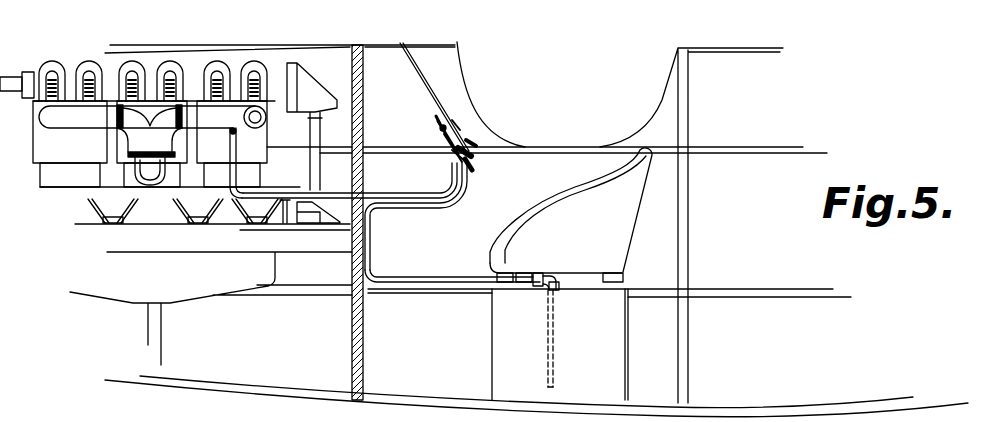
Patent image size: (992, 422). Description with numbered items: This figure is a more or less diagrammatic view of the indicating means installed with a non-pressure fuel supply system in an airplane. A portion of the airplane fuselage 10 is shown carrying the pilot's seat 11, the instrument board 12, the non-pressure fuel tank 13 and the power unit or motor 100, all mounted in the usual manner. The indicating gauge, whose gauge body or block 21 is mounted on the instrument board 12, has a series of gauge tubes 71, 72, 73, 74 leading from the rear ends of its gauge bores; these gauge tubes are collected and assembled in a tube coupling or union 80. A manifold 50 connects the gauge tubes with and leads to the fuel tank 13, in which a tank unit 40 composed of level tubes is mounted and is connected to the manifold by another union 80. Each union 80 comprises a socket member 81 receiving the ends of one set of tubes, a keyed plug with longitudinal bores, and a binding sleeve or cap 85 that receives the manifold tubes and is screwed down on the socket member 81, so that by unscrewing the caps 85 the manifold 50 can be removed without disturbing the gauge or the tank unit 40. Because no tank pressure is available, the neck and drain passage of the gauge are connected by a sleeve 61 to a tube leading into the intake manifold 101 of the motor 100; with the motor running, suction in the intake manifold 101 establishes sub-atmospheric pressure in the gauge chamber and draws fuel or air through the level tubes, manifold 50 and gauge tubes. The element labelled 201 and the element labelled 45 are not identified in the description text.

The airplane fuselage 10 is at (573, 143).
The pilot's seat 11 is at (560, 197).
The instrument board 12 is at (420, 77).
The non-pressure fuel tank 13 is at (498, 332).
The gauge body 21 is at (437, 120).
The tank unit 40 is at (557, 337).
The coupling 45 is at (557, 287).
The manifold 50 is at (430, 259).
The sleeve 61 is at (470, 159).
The gauge tube 71 is at (460, 153).
The gauge tube 72 is at (447, 147).
The gauge tube 73 is at (443, 133).
The gauge tube 74 is at (438, 127).
The tube coupling or union 80 is at (463, 173).
The socket member 81 is at (474, 144).
The binding sleeve or cap 85 is at (233, 140).
The motor 100 is at (88, 143).
The intake manifold 101 is at (253, 117).
The dash 201 is at (457, 125).